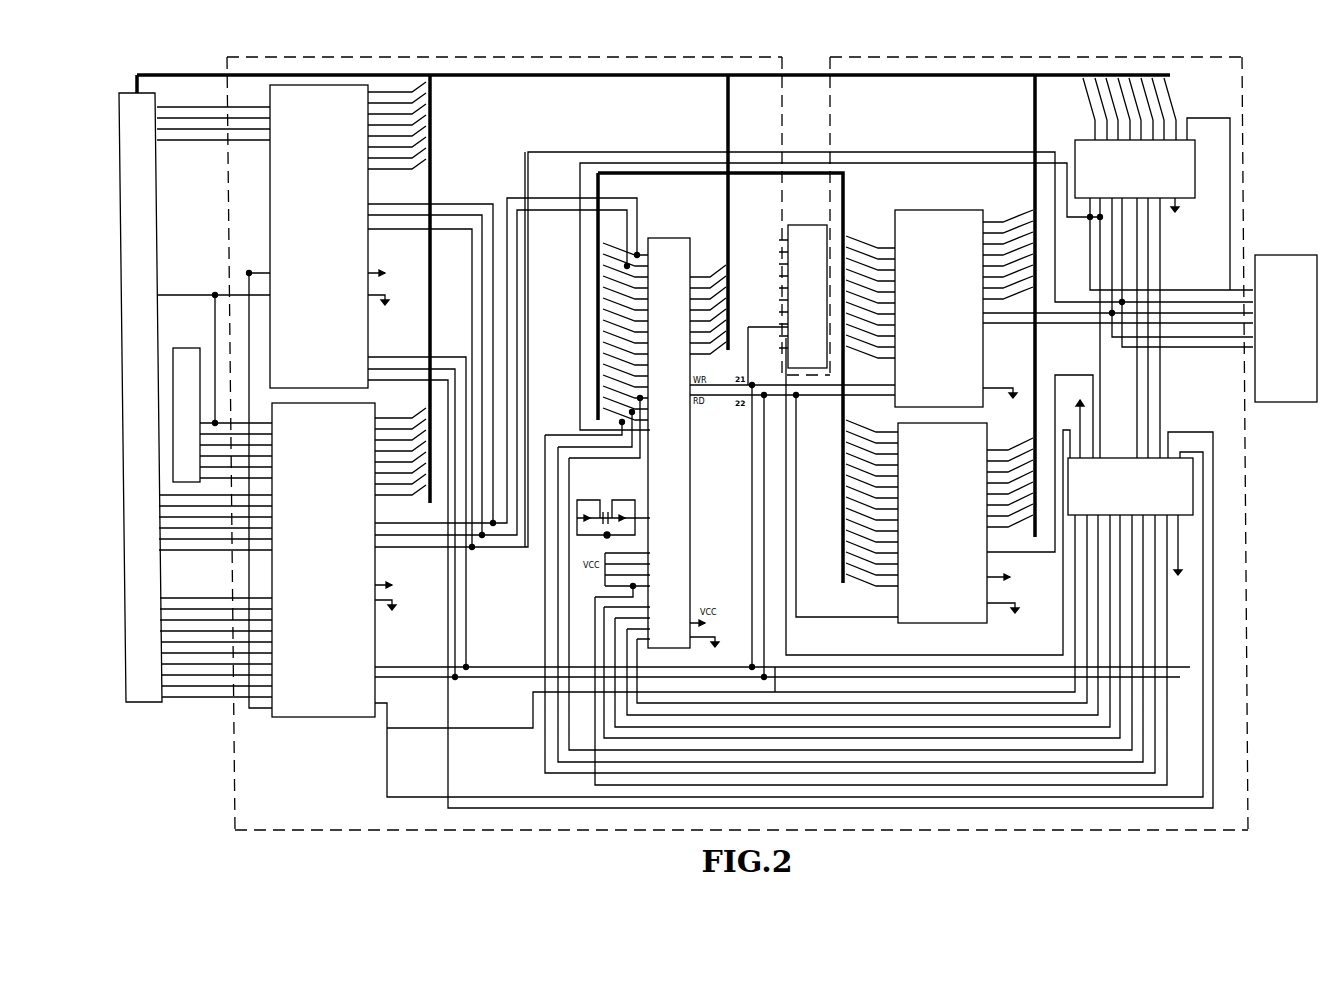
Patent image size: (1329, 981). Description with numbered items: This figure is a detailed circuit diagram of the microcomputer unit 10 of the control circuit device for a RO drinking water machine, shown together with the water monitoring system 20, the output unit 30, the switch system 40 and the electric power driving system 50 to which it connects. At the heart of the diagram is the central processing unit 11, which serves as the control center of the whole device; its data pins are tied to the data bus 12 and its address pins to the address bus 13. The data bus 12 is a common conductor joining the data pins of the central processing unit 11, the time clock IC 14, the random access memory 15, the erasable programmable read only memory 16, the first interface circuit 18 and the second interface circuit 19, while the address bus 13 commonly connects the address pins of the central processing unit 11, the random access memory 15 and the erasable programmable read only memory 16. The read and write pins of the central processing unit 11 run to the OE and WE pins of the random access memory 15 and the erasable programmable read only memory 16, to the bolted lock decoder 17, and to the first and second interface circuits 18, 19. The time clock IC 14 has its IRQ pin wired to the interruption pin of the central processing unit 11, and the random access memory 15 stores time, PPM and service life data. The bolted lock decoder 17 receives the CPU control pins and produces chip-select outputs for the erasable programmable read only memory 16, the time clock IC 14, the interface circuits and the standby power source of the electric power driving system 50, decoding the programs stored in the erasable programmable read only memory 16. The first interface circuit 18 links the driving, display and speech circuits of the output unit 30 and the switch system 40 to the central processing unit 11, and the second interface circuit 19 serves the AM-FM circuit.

The microcomputer unit 10 is at (1247, 605).
The central processing unit 11 is at (648, 238).
The data bus 12 is at (850, 78).
The address bus 13 is at (843, 175).
The time clock IC 14 is at (1192, 172).
The random access memory 15 is at (1049, 261).
The erasable programmable read only memory 16 is at (965, 423).
The bolted lock decoder 17 is at (1193, 490).
The first interface circuit 18 is at (277, 718).
The second interface circuit 19 is at (285, 85).
The water monitoring system 20 is at (818, 225).
The output unit 30 is at (128, 93).
The switch system 40 is at (190, 352).
The electric power driving system 50 is at (1273, 402).